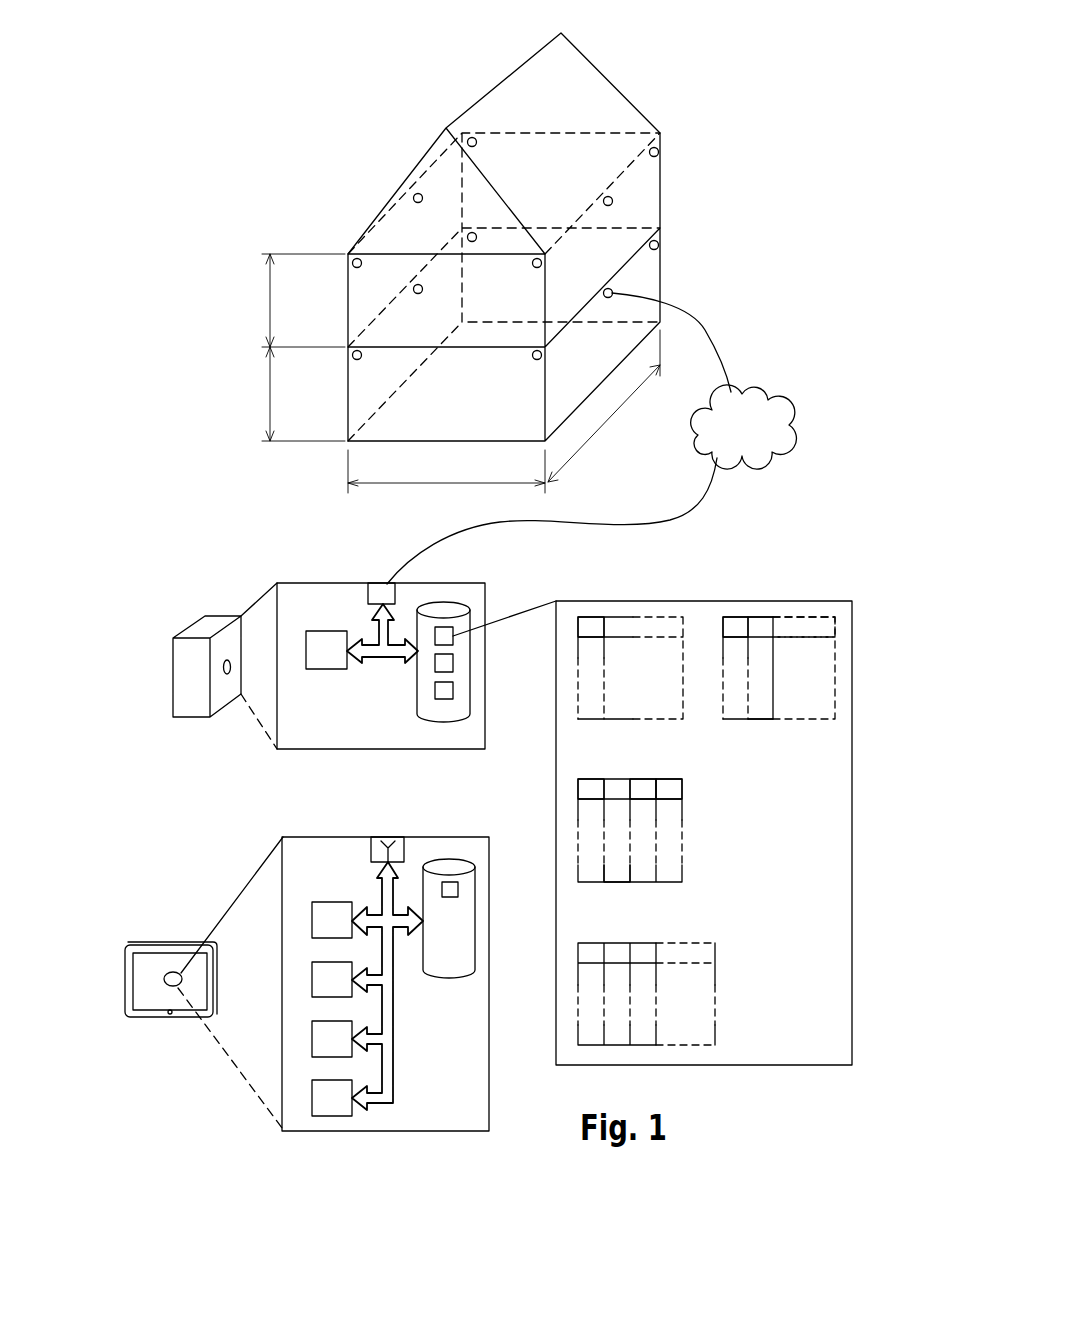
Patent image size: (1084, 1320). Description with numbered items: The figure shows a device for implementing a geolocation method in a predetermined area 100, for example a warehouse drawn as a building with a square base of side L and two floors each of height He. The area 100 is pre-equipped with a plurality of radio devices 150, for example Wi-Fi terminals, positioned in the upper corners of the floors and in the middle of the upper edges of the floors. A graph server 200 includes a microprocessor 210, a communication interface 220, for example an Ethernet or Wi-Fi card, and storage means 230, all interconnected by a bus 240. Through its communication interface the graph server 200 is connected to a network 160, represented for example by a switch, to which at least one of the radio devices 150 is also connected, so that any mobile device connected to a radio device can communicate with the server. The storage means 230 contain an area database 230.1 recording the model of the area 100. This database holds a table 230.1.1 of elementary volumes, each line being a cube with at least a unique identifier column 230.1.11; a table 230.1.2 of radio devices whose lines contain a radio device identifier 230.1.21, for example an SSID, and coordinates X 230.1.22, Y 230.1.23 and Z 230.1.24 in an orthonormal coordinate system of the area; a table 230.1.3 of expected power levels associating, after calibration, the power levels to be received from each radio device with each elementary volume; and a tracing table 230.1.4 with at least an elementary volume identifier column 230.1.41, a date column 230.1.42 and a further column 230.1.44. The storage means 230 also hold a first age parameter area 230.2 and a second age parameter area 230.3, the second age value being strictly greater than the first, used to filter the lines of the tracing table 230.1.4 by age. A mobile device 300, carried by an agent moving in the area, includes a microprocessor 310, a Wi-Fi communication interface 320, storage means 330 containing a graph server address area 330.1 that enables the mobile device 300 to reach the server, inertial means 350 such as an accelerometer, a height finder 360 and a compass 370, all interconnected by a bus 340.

The predetermined area 100 is at (446, 272).
The radio devices 150 is at (476, 144).
The network 160 is at (762, 406).
The graph server 200 is at (195, 710).
The microprocessor 210 is at (323, 631).
The communication interface 220 is at (380, 588).
The storage means 230 is at (447, 608).
The area database 230.1 is at (567, 600).
The table of elementary volumes 230.1.1 is at (676, 617).
The elementary volume identifier column 230.1.11 is at (594, 625).
The table of radio devices 230.1.2 is at (598, 883).
The radio device identifier 230.1.21 is at (600, 779).
The coordinate X 230.1.22 is at (624, 876).
The coordinate Y 230.1.23 is at (650, 800).
The coordinate Z 230.1.24 is at (676, 790).
The table of expected power levels 230.1.3 is at (718, 950).
The tracing table 230.1.4 is at (779, 668).
The elementary volume identifier column 230.1.41 is at (735, 625).
The date column 230.1.42 is at (762, 710).
The fourth table last cell 230.1.44 is at (826, 617).
The first age parameter area 230.2 is at (455, 662).
The second age parameter area 230.3 is at (455, 690).
The bus 240 is at (386, 660).
The mobile device 300 is at (165, 945).
The microprocessor 310 is at (330, 903).
The communication interface 320 is at (378, 838).
The storage means 330 is at (435, 862).
The graph server address area 330.1 is at (450, 882).
The bus 340 is at (394, 1022).
The inertial means 350 is at (320, 980).
The height finder 360 is at (318, 1038).
The compass 370 is at (328, 1105).